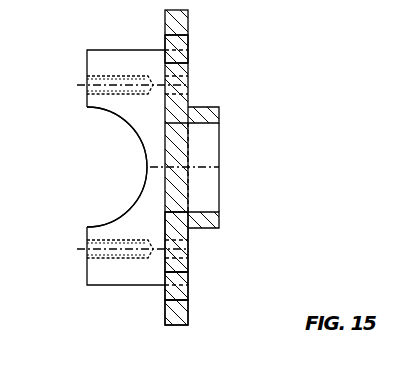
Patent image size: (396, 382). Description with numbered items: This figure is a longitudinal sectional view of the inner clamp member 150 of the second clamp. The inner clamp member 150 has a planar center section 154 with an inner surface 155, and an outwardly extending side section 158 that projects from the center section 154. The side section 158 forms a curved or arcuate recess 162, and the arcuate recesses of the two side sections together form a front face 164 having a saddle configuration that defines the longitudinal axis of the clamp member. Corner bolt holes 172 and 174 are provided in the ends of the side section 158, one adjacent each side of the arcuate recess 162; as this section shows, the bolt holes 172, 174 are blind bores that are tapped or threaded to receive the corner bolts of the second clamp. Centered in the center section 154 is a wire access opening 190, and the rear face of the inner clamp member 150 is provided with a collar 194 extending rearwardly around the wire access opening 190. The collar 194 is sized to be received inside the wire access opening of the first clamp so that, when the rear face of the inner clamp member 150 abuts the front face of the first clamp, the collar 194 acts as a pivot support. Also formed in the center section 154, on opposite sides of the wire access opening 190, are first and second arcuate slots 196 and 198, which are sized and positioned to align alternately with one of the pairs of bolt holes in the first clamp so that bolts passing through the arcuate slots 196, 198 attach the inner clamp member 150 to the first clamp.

The inner clamp member 150 is at (220, 148).
The planar center section 154 is at (190, 246).
The inner surface 155 is at (165, 312).
The side section 158 is at (125, 60).
The arcuate recess 162 is at (137, 183).
The front face 164 is at (140, 143).
The corner bolt hole 172 is at (89, 93).
The corner bolt hole 174 is at (89, 256).
The wire access opening 190 is at (208, 212).
The collar 194 is at (205, 107).
The first arcuate slot 196 is at (185, 37).
The second arcuate slot 198 is at (185, 303).